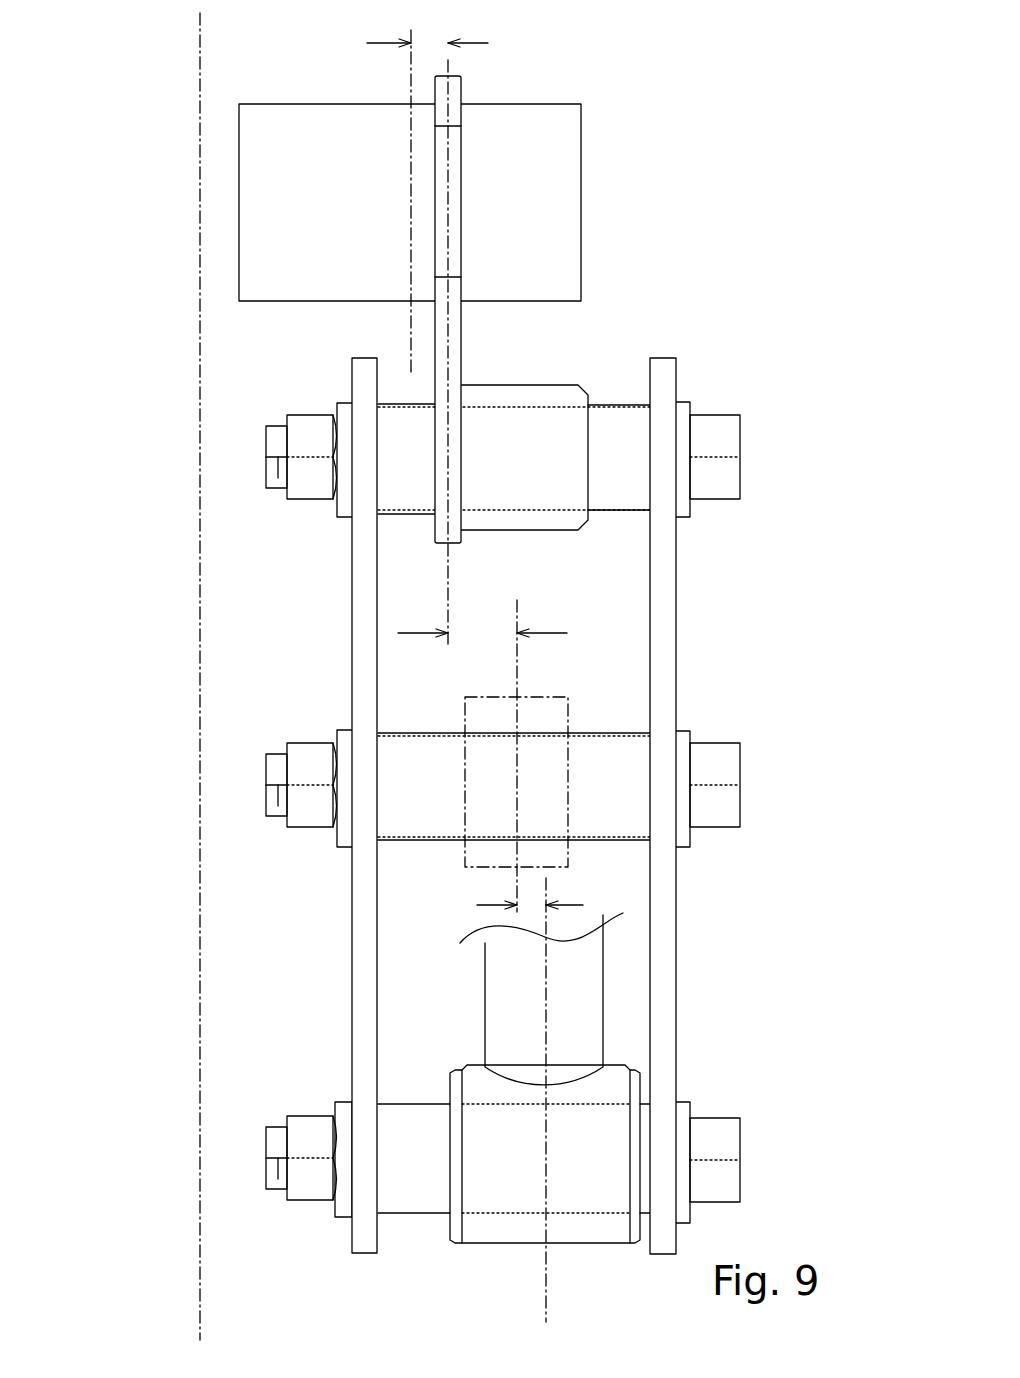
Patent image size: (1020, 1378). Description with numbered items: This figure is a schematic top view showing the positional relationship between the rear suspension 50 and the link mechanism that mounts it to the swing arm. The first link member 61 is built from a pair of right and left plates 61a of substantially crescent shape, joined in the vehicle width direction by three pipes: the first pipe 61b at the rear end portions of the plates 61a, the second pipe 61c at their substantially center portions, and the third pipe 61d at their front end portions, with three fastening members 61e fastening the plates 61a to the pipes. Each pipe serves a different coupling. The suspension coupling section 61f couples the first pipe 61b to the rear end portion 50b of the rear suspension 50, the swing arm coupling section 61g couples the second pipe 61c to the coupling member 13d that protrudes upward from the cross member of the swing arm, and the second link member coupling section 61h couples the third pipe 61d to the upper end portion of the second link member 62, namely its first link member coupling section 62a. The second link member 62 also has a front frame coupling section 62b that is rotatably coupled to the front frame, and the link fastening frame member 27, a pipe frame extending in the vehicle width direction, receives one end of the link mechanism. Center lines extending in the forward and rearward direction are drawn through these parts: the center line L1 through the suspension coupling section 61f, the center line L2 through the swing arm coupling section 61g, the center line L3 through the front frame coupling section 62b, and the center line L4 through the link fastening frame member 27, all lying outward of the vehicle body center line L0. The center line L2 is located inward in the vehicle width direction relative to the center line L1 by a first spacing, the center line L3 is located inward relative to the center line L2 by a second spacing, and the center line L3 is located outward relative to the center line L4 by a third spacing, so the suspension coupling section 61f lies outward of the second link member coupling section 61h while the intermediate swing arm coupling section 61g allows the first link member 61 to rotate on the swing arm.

The link fastening frame member 27 is at (560, 118).
The first link member 61 is at (681, 648).
The plates 61a is at (366, 373).
The first pipe 61b is at (405, 1128).
The second pipe 61c is at (603, 753).
The third pipe 61d is at (612, 492).
The fastening members 61e is at (308, 493).
The suspension coupling section 61f is at (495, 1195).
The swing arm coupling section 61g is at (483, 763).
The second link member coupling section 61h is at (437, 472).
The second link member 62 is at (436, 83).
The first link member coupling section 62a is at (440, 545).
The front frame coupling section 62b is at (445, 100).
The coupling member 13d is at (490, 697).
The rear suspension 50 is at (609, 991).
The rear end portion 50b is at (615, 1230).
The vehicle body center line L0 is at (200, 68).
The center line L1 is at (548, 1262).
The center line L2 is at (520, 672).
The center line L3 is at (450, 68).
The center line L4 is at (408, 330).